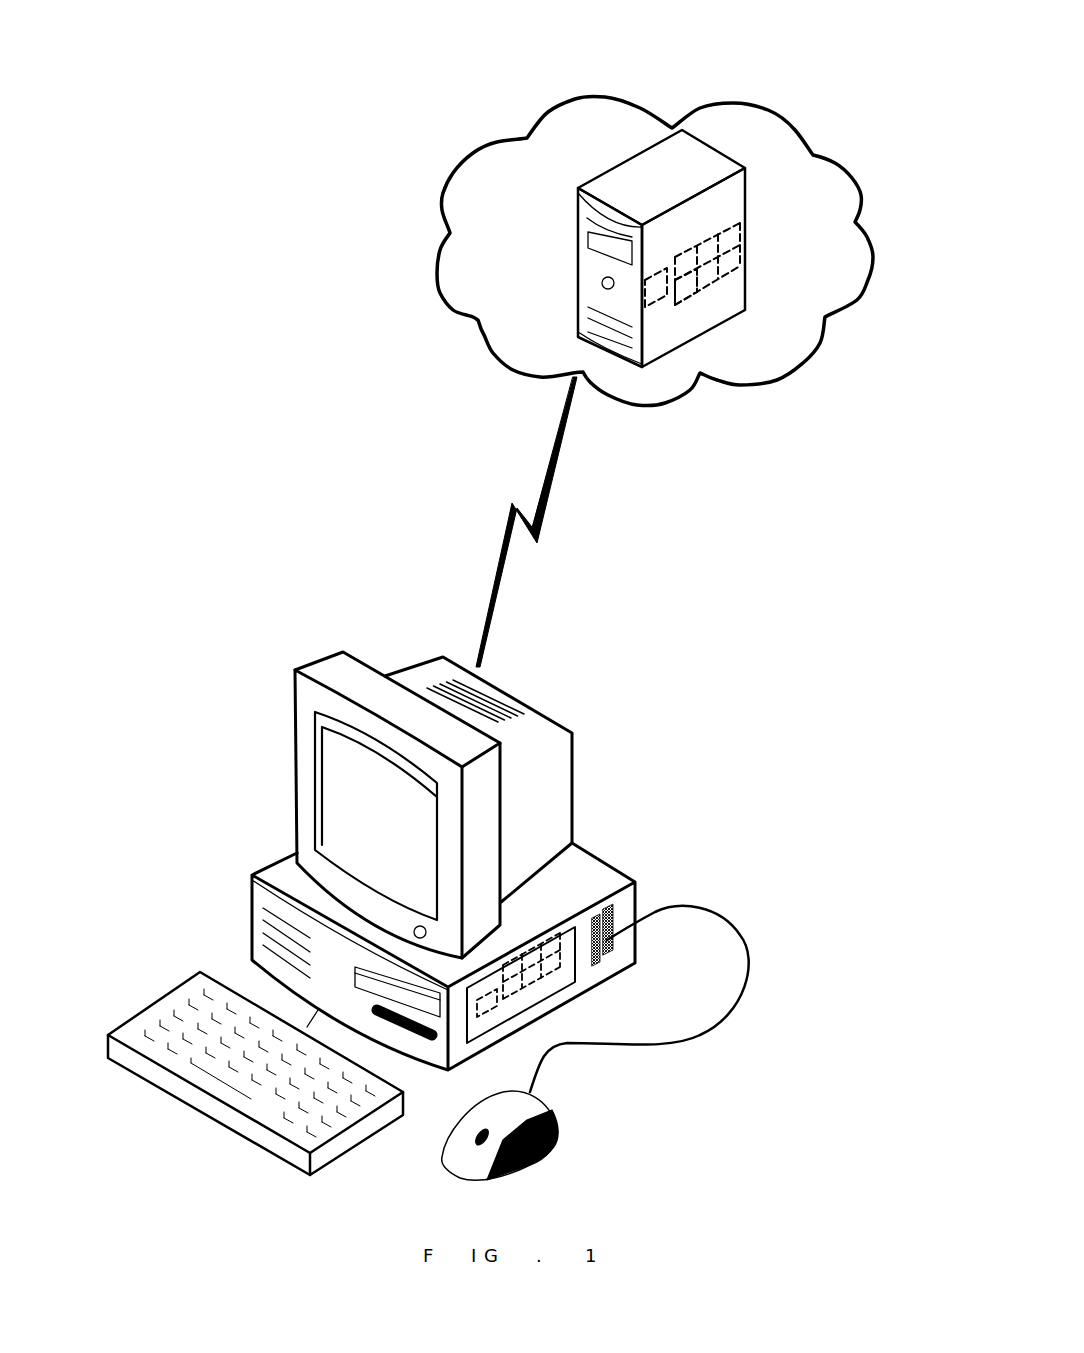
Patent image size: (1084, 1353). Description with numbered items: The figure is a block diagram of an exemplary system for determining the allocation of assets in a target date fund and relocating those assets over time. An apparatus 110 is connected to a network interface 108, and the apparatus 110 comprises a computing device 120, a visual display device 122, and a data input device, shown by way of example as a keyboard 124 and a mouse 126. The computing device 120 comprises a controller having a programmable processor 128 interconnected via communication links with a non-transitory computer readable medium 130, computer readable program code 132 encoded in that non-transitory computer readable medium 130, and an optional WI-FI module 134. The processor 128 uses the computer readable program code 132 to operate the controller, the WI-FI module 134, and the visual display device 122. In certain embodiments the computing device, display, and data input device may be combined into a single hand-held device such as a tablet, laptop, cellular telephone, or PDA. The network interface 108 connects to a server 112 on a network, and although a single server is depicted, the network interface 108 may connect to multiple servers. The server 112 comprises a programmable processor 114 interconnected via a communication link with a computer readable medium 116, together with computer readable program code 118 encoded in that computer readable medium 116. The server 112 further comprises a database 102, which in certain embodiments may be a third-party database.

The database 102 is at (683, 258).
The network interface 108 is at (556, 322).
The apparatus 110 is at (545, 660).
The server 112 is at (572, 285).
The programmable processor 114 is at (655, 300).
The computer readable medium 116 is at (668, 260).
The computer readable program code 118 is at (687, 288).
The computing device 120 is at (580, 872).
The visual display device 122 is at (345, 663).
The keyboard 124 is at (182, 1002).
The mouse 126 is at (577, 962).
The programmable processor 128 is at (210, 1168).
The non-transitory computer readable medium 130 is at (510, 1017).
The computer readable program code 132 is at (210, 1168).
The WI-FI module 134 is at (545, 960).